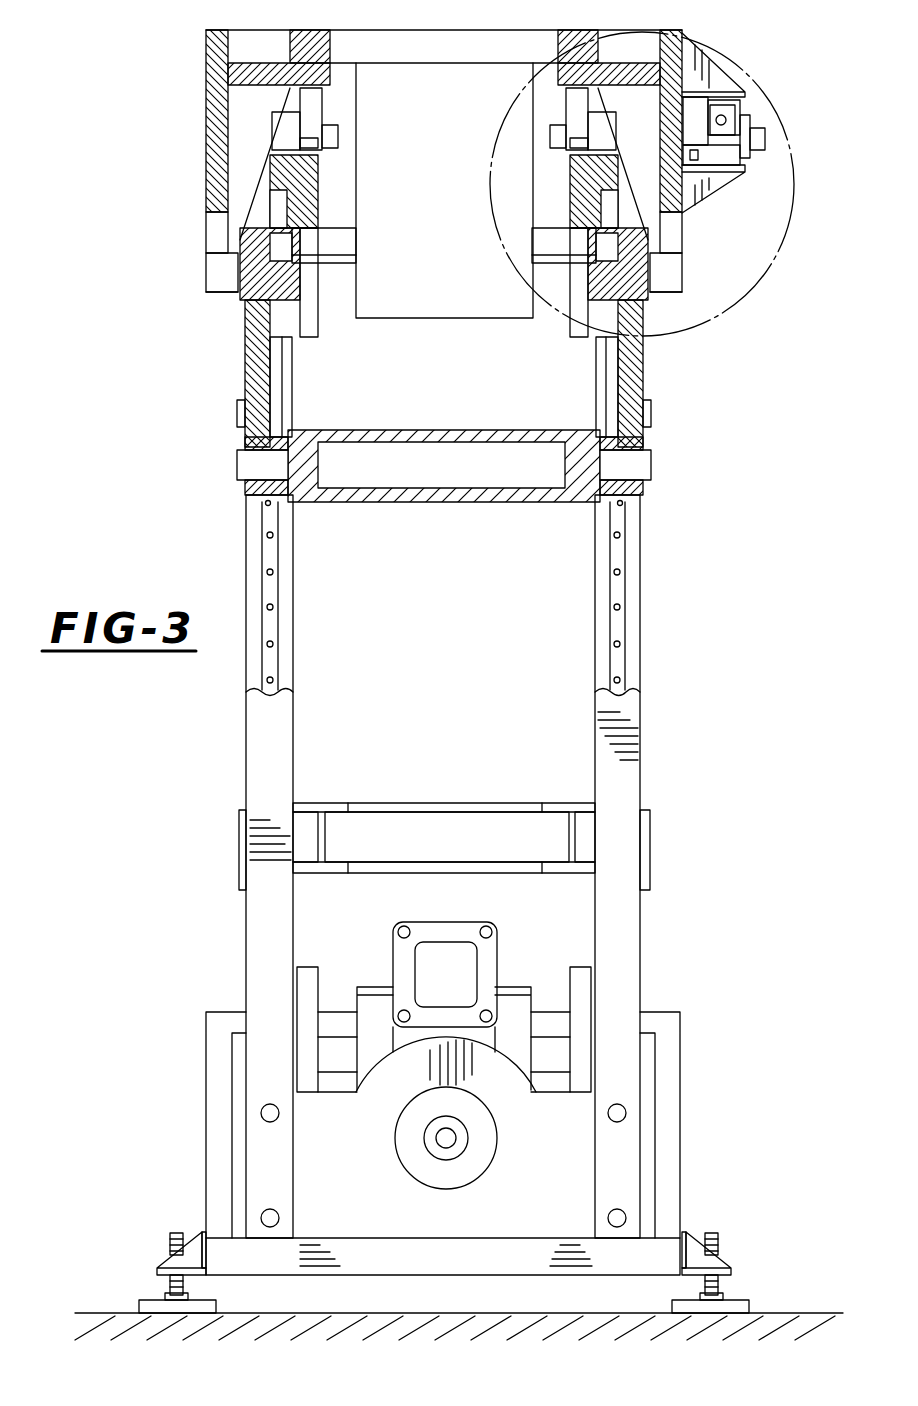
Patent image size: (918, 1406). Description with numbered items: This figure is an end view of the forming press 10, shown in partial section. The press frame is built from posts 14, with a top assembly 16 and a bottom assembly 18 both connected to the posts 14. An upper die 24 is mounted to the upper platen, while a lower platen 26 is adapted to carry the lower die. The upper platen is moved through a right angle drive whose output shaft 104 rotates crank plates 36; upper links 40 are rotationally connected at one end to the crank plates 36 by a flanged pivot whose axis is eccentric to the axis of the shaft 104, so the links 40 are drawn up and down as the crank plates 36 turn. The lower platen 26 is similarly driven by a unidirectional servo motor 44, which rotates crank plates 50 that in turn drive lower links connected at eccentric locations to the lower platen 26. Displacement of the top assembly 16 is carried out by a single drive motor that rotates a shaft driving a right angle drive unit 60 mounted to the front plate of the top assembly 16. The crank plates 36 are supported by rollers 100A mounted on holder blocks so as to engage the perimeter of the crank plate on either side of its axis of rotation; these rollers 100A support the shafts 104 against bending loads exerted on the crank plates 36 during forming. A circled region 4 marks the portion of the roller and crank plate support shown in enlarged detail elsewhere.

The detail view circle (FIG. 4 region) 4 is at (782, 330).
The forming press 10 is at (210, 447).
The posts 14 is at (244, 770).
The top assembly 16 is at (204, 160).
The bottom assembly 18 is at (205, 1079).
The upper die 24 is at (361, 430).
The lower platen 26 is at (380, 802).
The crank plates 36 is at (464, 324).
The upper links 40 is at (243, 330).
The unidirectional servo motor 44 is at (479, 920).
The crank plates 50 is at (321, 965).
The right angle drive unit 60 is at (752, 181).
The rollers 100A is at (276, 110).
The output shaft 104 is at (332, 233).